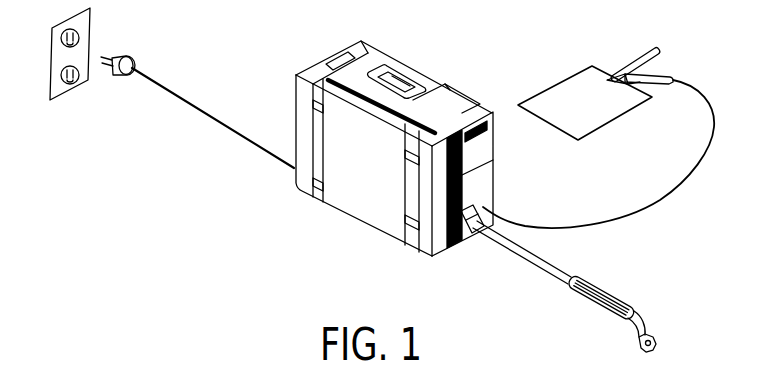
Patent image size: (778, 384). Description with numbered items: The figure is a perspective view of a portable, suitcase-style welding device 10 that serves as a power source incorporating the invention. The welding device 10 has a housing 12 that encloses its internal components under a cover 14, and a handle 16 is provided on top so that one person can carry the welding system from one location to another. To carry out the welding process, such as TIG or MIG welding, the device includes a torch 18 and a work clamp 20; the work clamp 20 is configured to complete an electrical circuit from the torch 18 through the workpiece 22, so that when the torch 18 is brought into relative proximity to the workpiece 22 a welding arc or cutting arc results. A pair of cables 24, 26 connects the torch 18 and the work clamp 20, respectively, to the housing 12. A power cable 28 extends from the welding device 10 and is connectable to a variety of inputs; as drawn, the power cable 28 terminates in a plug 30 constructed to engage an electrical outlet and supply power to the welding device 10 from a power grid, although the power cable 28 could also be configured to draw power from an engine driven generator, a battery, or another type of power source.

The welding device 10 is at (487, 50).
The housing 12 is at (427, 90).
The cover 14 is at (365, 221).
The handle 16 is at (398, 70).
The torch 18 is at (612, 281).
The work clamp 20 is at (662, 85).
The workpiece 22 is at (545, 138).
The cable 24 is at (547, 272).
The cable 26 is at (714, 135).
The power cable 28 is at (227, 128).
The plug 30 is at (124, 58).